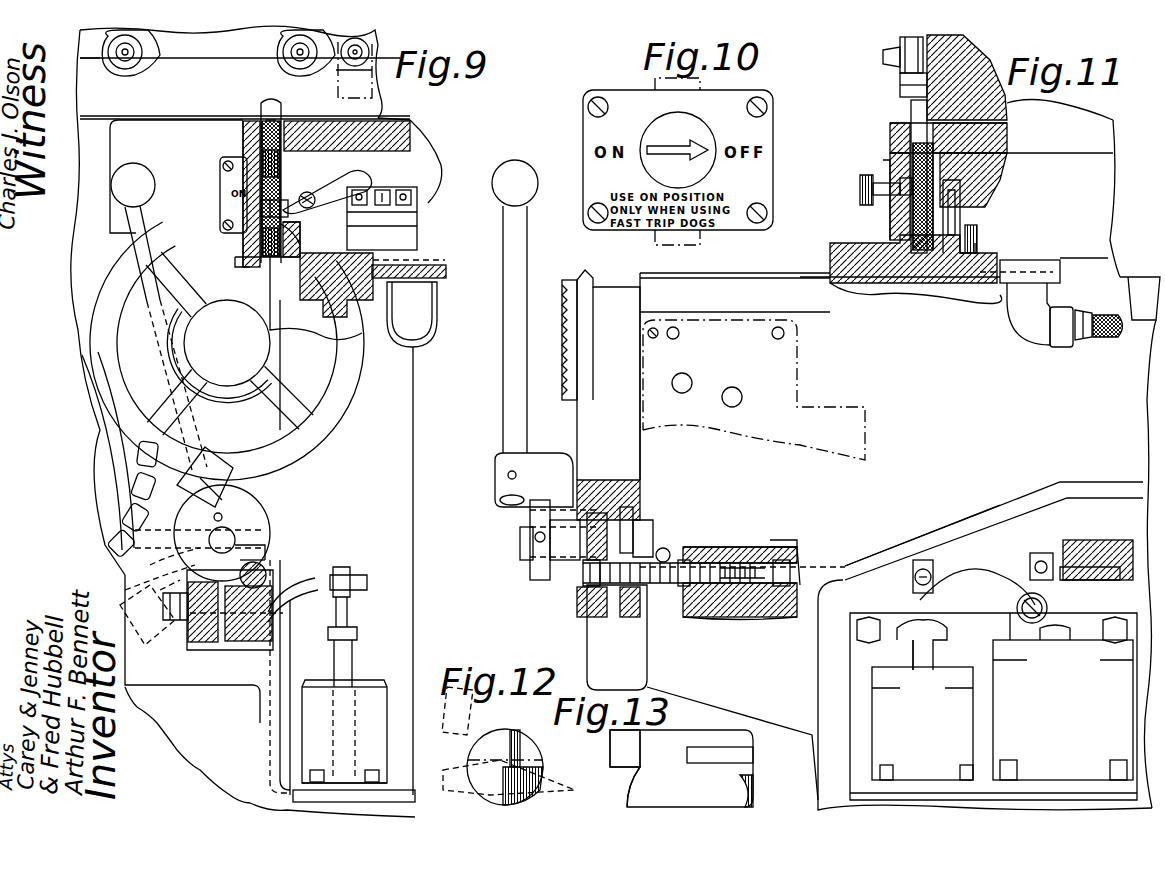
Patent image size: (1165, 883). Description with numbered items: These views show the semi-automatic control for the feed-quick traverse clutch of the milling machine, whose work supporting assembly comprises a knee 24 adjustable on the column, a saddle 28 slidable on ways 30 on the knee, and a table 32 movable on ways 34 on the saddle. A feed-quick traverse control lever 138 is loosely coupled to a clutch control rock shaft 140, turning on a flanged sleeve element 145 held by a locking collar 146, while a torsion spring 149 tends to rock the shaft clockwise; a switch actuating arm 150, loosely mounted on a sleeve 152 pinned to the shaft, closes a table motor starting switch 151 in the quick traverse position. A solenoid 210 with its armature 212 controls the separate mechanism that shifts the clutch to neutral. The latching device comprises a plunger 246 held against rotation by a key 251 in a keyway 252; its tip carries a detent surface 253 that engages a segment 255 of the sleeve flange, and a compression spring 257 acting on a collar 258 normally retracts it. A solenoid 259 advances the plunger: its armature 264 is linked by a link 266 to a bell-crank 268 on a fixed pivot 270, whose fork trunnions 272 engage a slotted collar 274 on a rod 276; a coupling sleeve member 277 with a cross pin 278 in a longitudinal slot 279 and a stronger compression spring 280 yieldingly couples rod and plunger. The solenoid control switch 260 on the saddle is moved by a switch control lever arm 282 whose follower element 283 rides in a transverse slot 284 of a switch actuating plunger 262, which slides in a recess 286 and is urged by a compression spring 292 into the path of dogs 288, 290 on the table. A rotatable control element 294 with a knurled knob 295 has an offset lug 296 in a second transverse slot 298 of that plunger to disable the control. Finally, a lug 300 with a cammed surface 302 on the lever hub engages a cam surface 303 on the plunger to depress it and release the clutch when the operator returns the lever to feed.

In FIG. 9, the knee 24 is at (78, 320).
In FIG. 11, the knee 24 is at (898, 541).
In FIG. 9, the saddle 28 is at (78, 220).
In FIG. 11, the saddle 28 is at (1095, 190).
In FIG. 9, the ways 30 is at (312, 278).
In FIG. 11, the ways 30 is at (1135, 290).
In FIG. 9, the table 32 is at (80, 97).
In FIG. 11, the table 32 is at (1090, 120).
In FIG. 11, the ways 34 is at (990, 120).
In FIG. 9, the feed-quick traverse control lever 138 is at (152, 335).
In FIG. 11, the feed-quick traverse control lever 138 is at (505, 415).
In FIG. 9, the clutch control rock shaft 140 is at (178, 535).
In FIG. 11, the clutch control rock shaft 140 is at (650, 540).
In FIG. 11, the sleeve element 145 is at (530, 520).
In FIG. 9, the locking collar 146 is at (205, 477).
In FIG. 11, the locking collar 146 is at (540, 573).
In FIG. 11, the torsion spring 149 is at (590, 470).
In FIG. 9, the switch actuating arm 150 is at (145, 567).
In FIG. 9, the table motor starting switch 151 is at (150, 615).
In FIG. 11, the sleeve 152 is at (595, 560).
In FIG. 11, the solenoid 210 is at (1063, 710).
In FIG. 11, the armature 212 is at (1065, 640).
In FIG. 11, the plunger 246 is at (700, 585).
In FIG. 12, the plunger 246 is at (495, 755).
In FIG. 13, the plunger 246 is at (745, 790).
In FIG. 11, the key 251 is at (617, 637).
In FIG. 13, the keyway 252 is at (740, 762).
In FIG. 12, the detent surface 253 is at (522, 745).
In FIG. 13, the detent surface 253 is at (630, 752).
In FIG. 12, the segment 255 is at (455, 715).
In FIG. 11, the compression spring 257 is at (665, 548).
In FIG. 11, the collar 258 is at (688, 562).
In FIG. 9, the solenoid 259 is at (318, 742).
In FIG. 11, the solenoid 259 is at (922, 723).
In FIG. 9, the solenoid control switch 260 is at (385, 215).
In FIG. 11, the solenoid control switch 260 is at (960, 195).
In FIG. 9, the switch actuating plunger 262 is at (283, 103).
In FIG. 10, the switch actuating plunger 262 is at (700, 83).
In FIG. 11, the switch actuating plunger 262 is at (913, 110).
In FIG. 9, the armature 264 is at (352, 660).
In FIG. 11, the armature 264 is at (933, 655).
In FIG. 9, the link 266 is at (352, 598).
In FIG. 11, the link 266 is at (933, 605).
In FIG. 9, the bell-crank 268 is at (312, 590).
In FIG. 11, the bell-crank 268 is at (980, 580).
In FIG. 9, the fixed pivot 270 is at (200, 650).
In FIG. 11, the fixed pivot 270 is at (1010, 600).
In FIG. 9, the trunnions 272 is at (258, 565).
In FIG. 11, the trunnions 272 is at (1045, 553).
In FIG. 9, the slotted collar 274 is at (247, 560).
In FIG. 11, the slotted collar 274 is at (1010, 550).
In FIG. 9, the rod 276 is at (255, 562).
In FIG. 11, the rod 276 is at (791, 555).
In FIG. 11, the sleeve member 277 is at (775, 540).
In FIG. 11, the cross pin 278 is at (770, 620).
In FIG. 11, the longitudinal slot 279 is at (775, 590).
In FIG. 11, the compression spring 280 is at (705, 585).
In FIG. 9, the switch control lever arm 282 is at (418, 158).
In FIG. 9, the follower element 283 is at (304, 239).
In FIG. 11, the follower element 283 is at (978, 235).
In FIG. 9, the transverse slot 284 is at (262, 208).
In FIG. 9, the recess 286 is at (262, 152).
In FIG. 11, the recess 286 is at (973, 150).
In FIG. 9, the dog 288 is at (138, 68).
In FIG. 9, the dog 290 is at (288, 68).
In FIG. 11, the dog 290 is at (900, 80).
In FIG. 9, the compression spring 292 is at (270, 120).
In FIG. 11, the compression spring 292 is at (950, 165).
In FIG. 11, the rotatable control element 294 is at (890, 175).
In FIG. 10, the knurled knob 295 is at (660, 115).
In FIG. 11, the knurled knob 295 is at (873, 190).
In FIG. 9, the axially offset lug 296 is at (262, 183).
In FIG. 11, the axially offset lug 296 is at (905, 195).
In FIG. 9, the transverse slot 298 is at (270, 175).
In FIG. 11, the transverse slot 298 is at (915, 165).
In FIG. 12, the lug 300 is at (470, 805).
In FIG. 11, the cammed surface 302 is at (580, 598).
In FIG. 11, the cam surface 303 is at (600, 620).
In FIG. 12, the cam surface 303 is at (525, 790).
In FIG. 13, the cam surface 303 is at (635, 790).